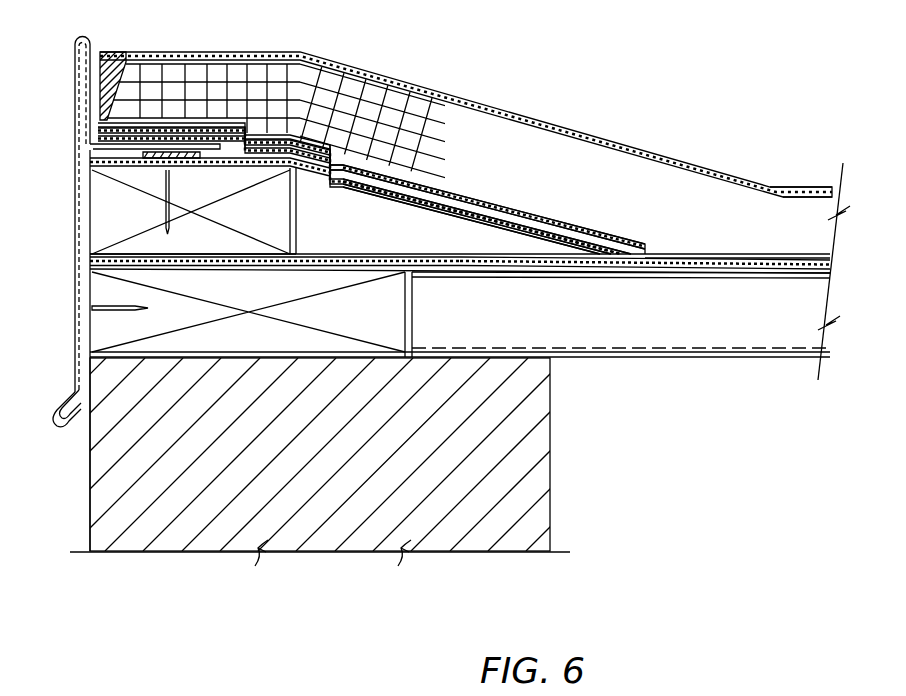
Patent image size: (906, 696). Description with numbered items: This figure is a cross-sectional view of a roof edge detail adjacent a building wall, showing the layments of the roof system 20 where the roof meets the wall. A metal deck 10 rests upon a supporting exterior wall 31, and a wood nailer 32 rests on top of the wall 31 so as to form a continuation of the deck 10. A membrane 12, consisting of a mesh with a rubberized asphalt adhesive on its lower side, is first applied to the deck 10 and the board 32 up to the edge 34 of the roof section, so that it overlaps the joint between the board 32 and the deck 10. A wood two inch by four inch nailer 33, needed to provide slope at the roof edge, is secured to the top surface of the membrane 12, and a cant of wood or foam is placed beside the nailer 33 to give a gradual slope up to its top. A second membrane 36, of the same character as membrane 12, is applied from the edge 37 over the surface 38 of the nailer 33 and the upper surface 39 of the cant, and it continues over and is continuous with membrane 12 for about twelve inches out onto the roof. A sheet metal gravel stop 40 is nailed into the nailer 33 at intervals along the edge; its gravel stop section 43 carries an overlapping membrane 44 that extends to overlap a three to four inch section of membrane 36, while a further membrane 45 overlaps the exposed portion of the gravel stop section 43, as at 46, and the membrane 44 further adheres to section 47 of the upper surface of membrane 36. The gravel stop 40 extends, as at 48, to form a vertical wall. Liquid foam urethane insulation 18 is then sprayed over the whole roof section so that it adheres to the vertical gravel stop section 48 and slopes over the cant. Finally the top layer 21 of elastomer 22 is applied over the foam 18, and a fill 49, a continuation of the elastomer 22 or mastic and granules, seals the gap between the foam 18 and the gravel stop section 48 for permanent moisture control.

The metal deck 10 is at (651, 364).
The membrane 12 is at (838, 268).
The foam insulation 18 is at (406, 119).
The roof system 20 is at (583, 87).
The top layer 21 is at (660, 153).
The elastomer 22 is at (838, 188).
The exterior wall 31 is at (552, 483).
The wood nailer 32 is at (118, 318).
The nailer 33 is at (103, 203).
The edge 34 is at (80, 262).
The membrane 36 is at (838, 259).
The edge 37 is at (90, 163).
The surface 38 is at (146, 177).
The upper surface 39 is at (427, 212).
The sheet metal gravel stop 40 is at (75, 83).
The gravel stop section 43 is at (205, 150).
The membrane 44 is at (323, 154).
The membrane 45 is at (567, 212).
The overlap 46 is at (122, 143).
The section 47 is at (737, 253).
The gravel stop section 48 is at (90, 115).
The fill 49 is at (111, 52).